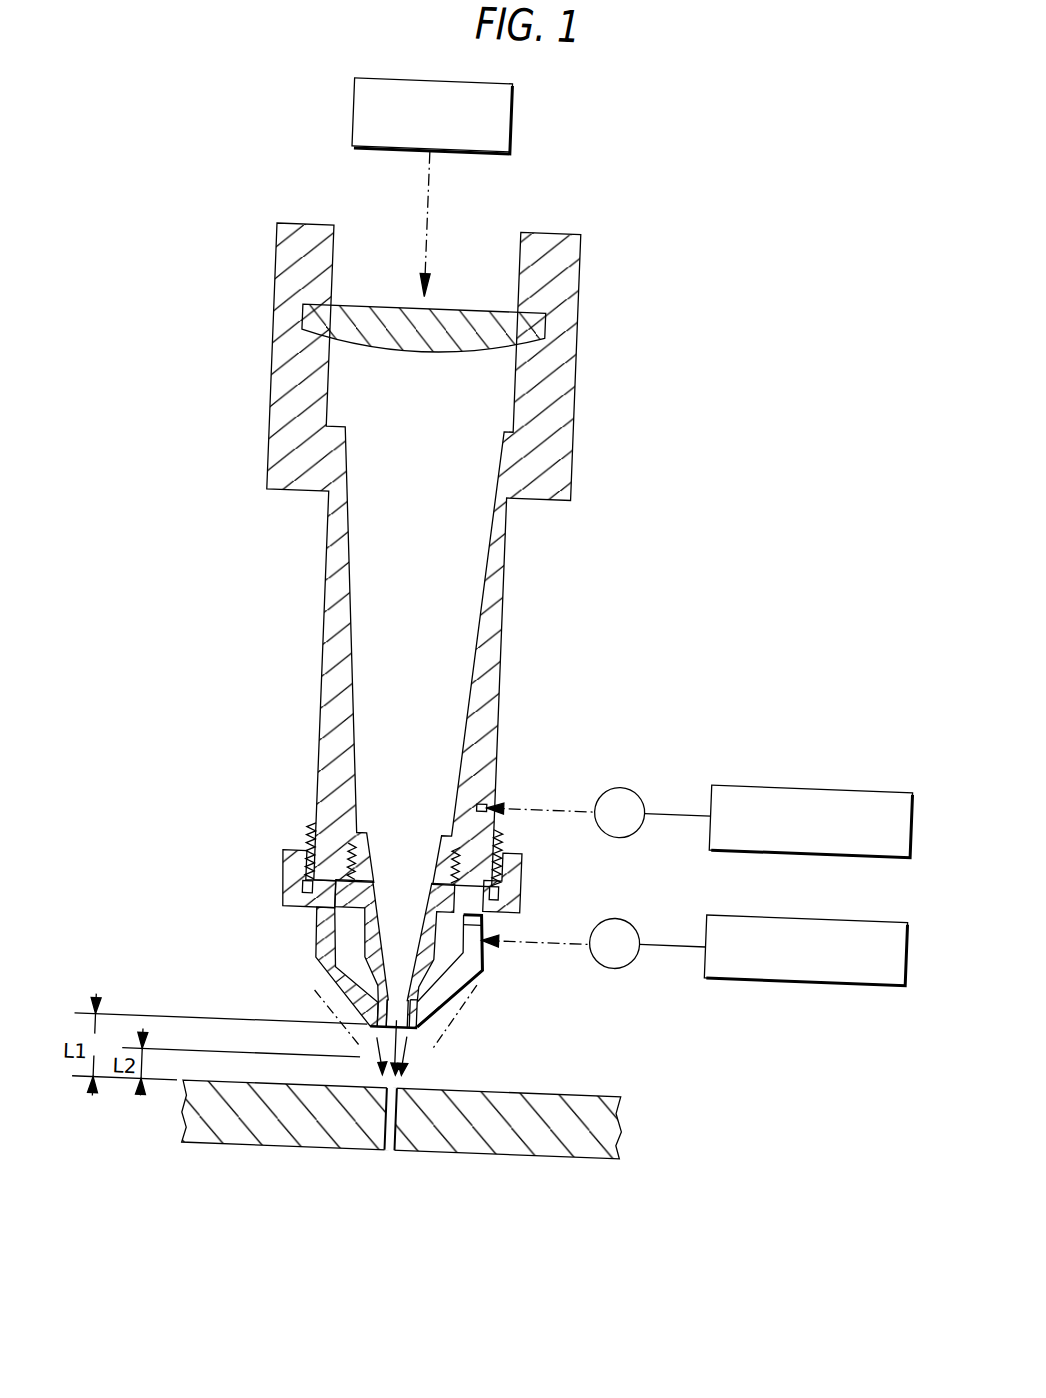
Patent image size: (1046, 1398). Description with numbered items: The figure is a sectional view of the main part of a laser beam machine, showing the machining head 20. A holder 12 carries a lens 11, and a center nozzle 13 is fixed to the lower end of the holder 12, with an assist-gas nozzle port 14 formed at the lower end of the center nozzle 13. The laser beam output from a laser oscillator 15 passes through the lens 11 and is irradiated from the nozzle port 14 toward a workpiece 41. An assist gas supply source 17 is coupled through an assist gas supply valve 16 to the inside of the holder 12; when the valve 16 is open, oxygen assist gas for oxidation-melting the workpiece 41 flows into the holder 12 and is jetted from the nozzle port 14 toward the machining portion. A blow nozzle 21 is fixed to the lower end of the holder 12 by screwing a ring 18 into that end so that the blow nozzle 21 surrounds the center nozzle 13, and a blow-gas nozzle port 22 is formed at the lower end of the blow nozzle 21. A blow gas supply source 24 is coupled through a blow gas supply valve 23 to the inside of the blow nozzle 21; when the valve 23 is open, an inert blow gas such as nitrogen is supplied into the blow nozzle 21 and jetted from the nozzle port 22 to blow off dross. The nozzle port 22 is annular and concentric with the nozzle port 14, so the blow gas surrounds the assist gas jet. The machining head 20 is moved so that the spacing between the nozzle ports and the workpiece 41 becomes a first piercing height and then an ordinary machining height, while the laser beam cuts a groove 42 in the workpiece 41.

The lens 11 is at (549, 310).
The holder 12 is at (580, 429).
The center nozzle 13 is at (389, 932).
The assist-gas nozzle port 14 is at (408, 1006).
The laser oscillator 15 is at (508, 106).
The assist gas supply valve 16 is at (641, 774).
The assist gas supply source 17 is at (831, 762).
The ring 18 is at (308, 876).
The machining head 20 is at (456, 537).
The blow nozzle 21 is at (512, 957).
The blow-gas nozzle port 22 is at (463, 1019).
The blow gas supply valve 23 is at (643, 906).
The blow gas supply source 24 is at (832, 892).
The workpiece 41 is at (424, 1146).
The cut groove 42 is at (425, 1145).